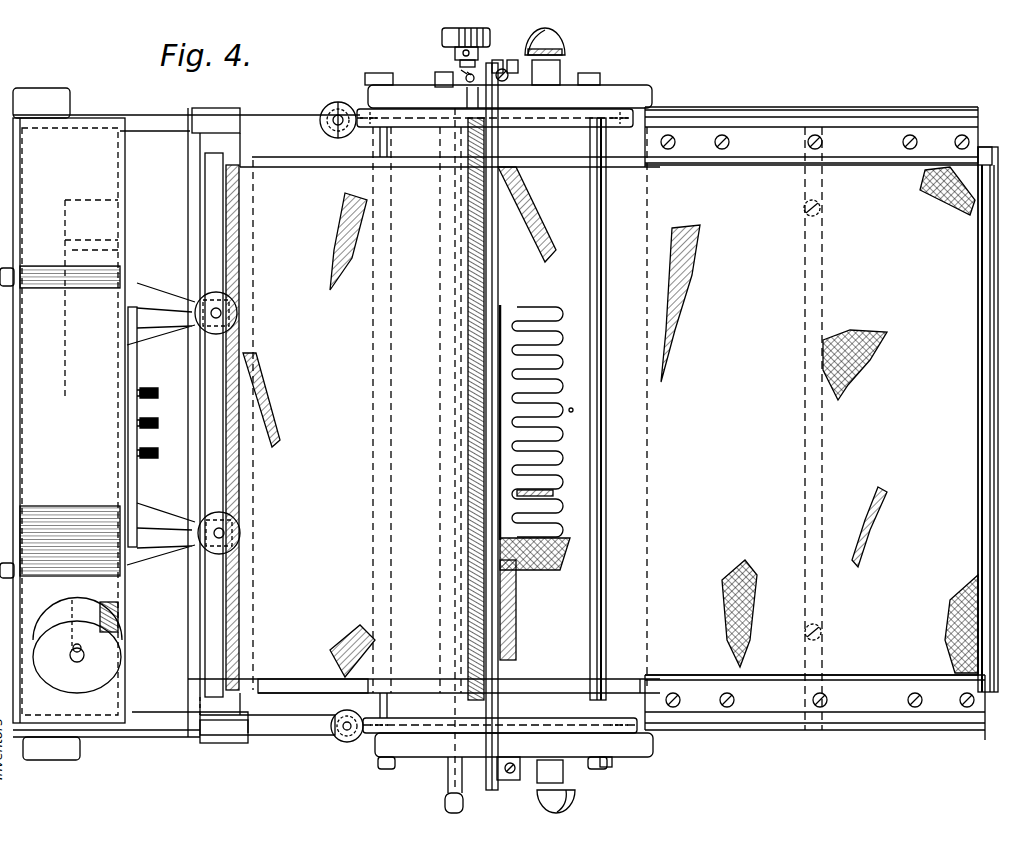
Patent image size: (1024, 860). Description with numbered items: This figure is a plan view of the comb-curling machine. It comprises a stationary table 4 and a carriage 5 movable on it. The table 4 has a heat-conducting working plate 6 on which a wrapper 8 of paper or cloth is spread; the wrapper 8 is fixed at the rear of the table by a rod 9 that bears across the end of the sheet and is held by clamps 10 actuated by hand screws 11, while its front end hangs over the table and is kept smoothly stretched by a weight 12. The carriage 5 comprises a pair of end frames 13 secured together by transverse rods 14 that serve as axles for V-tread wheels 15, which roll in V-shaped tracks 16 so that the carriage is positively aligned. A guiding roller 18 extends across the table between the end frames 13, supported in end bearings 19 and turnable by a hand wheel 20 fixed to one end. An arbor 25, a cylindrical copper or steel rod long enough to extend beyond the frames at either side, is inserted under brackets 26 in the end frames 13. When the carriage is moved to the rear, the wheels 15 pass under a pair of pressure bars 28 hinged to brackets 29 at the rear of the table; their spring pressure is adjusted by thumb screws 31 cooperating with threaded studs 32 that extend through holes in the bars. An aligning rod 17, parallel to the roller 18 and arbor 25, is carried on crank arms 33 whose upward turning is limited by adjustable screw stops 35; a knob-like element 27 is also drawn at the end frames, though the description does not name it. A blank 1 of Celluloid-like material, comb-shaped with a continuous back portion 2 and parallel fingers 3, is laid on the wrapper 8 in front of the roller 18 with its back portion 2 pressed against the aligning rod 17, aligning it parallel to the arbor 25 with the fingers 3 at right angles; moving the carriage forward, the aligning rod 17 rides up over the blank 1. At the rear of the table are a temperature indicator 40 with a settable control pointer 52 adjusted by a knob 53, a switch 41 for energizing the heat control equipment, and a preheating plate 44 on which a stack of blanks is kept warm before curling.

The blank 1 is at (539, 300).
The back portion 2 is at (506, 300).
The fingers 3 is at (556, 455).
The table 4 is at (985, 705).
The carriage 5 is at (616, 770).
The working plate 6 is at (650, 735).
The wrapper 8 is at (765, 452).
The rod 9 is at (215, 617).
The clamps 10 is at (198, 300).
The hand screws 11 is at (240, 313).
The weight 12 is at (990, 147).
The end frames 13 is at (365, 92).
The transverse rods 14 is at (373, 525).
The wheels 15 is at (336, 100).
The V-shaped tracks 16 is at (763, 108).
The aligning rod 17 is at (500, 590).
The guiding roller 18 is at (468, 150).
The end bearings 19 is at (465, 74).
The hand wheel 20 is at (442, 36).
The arbor 25 is at (437, 80).
The brackets 26 is at (443, 98).
The knob 27 is at (566, 40).
The pressure bars 28 is at (622, 112).
The brackets 29 is at (205, 110).
The thumb screws 31 is at (338, 138).
The threaded studs 32 is at (325, 110).
The crank arms 33 is at (525, 68).
The screw stops 35 is at (510, 80).
The temperature indicator 40 is at (80, 436).
The switch 41 is at (100, 672).
The preheating plate 44 is at (290, 694).
The control pointer 52 is at (440, 525).
The knob 53 is at (140, 422).